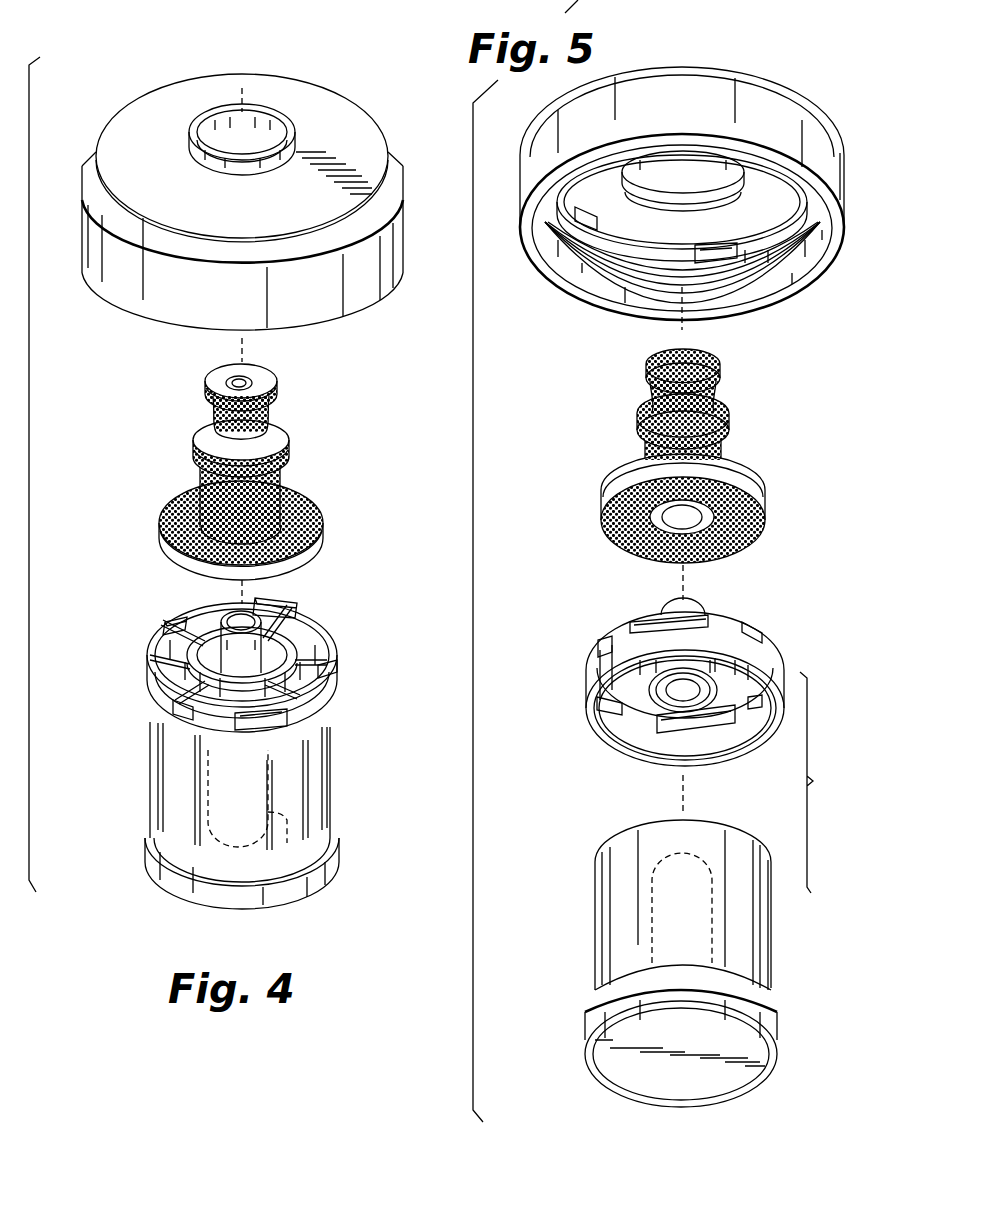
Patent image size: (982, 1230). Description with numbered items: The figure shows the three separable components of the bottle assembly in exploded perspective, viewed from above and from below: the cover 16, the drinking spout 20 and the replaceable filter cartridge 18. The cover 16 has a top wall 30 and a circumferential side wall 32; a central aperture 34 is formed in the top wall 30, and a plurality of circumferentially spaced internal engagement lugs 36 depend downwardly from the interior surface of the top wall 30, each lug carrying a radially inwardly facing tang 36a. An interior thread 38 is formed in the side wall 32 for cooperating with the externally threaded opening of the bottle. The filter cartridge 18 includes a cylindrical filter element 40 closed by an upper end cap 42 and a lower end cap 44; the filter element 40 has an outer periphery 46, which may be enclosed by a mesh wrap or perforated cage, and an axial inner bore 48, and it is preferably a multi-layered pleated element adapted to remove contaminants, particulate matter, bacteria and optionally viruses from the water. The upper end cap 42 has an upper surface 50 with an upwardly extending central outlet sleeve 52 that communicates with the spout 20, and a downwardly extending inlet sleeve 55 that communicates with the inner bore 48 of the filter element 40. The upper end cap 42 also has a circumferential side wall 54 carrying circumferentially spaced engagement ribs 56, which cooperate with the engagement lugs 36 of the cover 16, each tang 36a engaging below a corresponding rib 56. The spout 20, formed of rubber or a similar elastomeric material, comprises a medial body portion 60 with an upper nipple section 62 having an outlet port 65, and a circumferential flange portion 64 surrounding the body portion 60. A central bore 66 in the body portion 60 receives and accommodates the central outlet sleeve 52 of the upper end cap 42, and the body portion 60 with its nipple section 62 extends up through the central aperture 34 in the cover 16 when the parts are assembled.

In FIG. 4, the cover 16 is at (242, 186).
In FIG. 5, the cover 16 is at (684, 190).
In FIG. 4, the replaceable filter cartridge 18 is at (233, 725).
In FIG. 5, the replaceable filter cartridge 18 is at (696, 834).
In FIG. 4, the spout 20 is at (262, 457).
In FIG. 5, the spout 20 is at (683, 461).
In FIG. 4, the top wall 30 is at (307, 102).
In FIG. 5, the top wall 30 is at (680, 217).
In FIG. 4, the circumferential side wall 32 is at (365, 287).
In FIG. 5, the circumferential side wall 32 is at (807, 130).
In FIG. 4, the central aperture 34 is at (230, 130).
In FIG. 5, the internal engagement lugs 36 is at (598, 210).
In FIG. 5, the radially inwardly facing tang 36a is at (725, 270).
In FIG. 5, the interior thread 38 is at (583, 260).
In FIG. 4, the cylindrical filter element 40 is at (245, 810).
In FIG. 5, the cylindrical filter element 40 is at (681, 944).
In FIG. 4, the upper end cap 42 is at (218, 691).
In FIG. 5, the upper end cap 42 is at (675, 672).
In FIG. 4, the lower end cap 44 is at (344, 836).
In FIG. 5, the lower end cap 44 is at (781, 1026).
In FIG. 4, the outer periphery 46 is at (180, 803).
In FIG. 5, the outer periphery 46 is at (602, 940).
In FIG. 4, the axial inner bore 48 is at (280, 810).
In FIG. 5, the axial inner bore 48 is at (702, 865).
In FIG. 4, the upper surface 50 is at (280, 642).
In FIG. 5, the upper surface 50 is at (647, 690).
In FIG. 4, the central outlet sleeve 52 is at (213, 610).
In FIG. 5, the central outlet sleeve 52 is at (665, 600).
In FIG. 4, the circumferential side wall 54 is at (197, 722).
In FIG. 5, the circumferential side wall 54 is at (598, 642).
In FIG. 5, the inlet sleeve 55 is at (648, 692).
In FIG. 4, the engagement ribs 56 is at (148, 686).
In FIG. 5, the engagement ribs 56 is at (653, 623).
In FIG. 4, the body portion 60 is at (287, 447).
In FIG. 5, the body portion 60 is at (637, 437).
In FIG. 4, the upper nipple section 62 is at (273, 372).
In FIG. 5, the upper nipple section 62 is at (652, 362).
In FIG. 4, the circumferential flange portion 64 is at (313, 507).
In FIG. 5, the circumferential flange portion 64 is at (665, 514).
In FIG. 4, the outlet port 65 is at (246, 386).
In FIG. 5, the central bore 66 is at (688, 515).